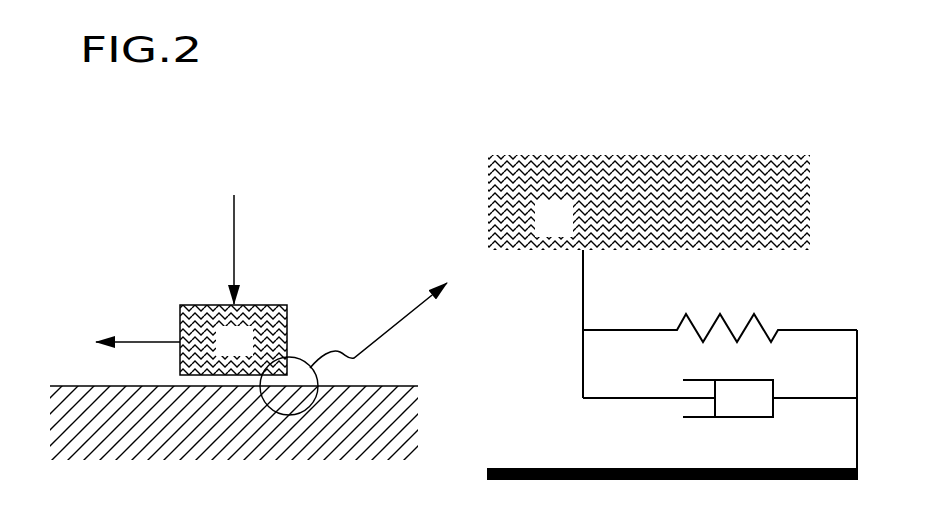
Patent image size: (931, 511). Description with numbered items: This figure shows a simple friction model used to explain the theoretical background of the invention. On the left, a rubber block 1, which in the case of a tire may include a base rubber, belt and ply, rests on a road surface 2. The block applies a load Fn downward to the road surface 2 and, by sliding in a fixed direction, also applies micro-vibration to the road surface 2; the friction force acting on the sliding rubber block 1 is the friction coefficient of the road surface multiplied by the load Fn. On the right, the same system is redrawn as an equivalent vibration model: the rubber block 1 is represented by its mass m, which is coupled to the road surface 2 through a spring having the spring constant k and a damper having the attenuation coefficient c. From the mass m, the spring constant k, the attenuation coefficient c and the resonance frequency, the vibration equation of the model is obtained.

The rubber block 1 is at (270, 306).
The road surface 2 is at (370, 386).
The load Fn is at (262, 249).
The mass of the rubber block m is at (649, 202).
The spring constant k is at (720, 310).
The attenuation coefficient c is at (720, 384).